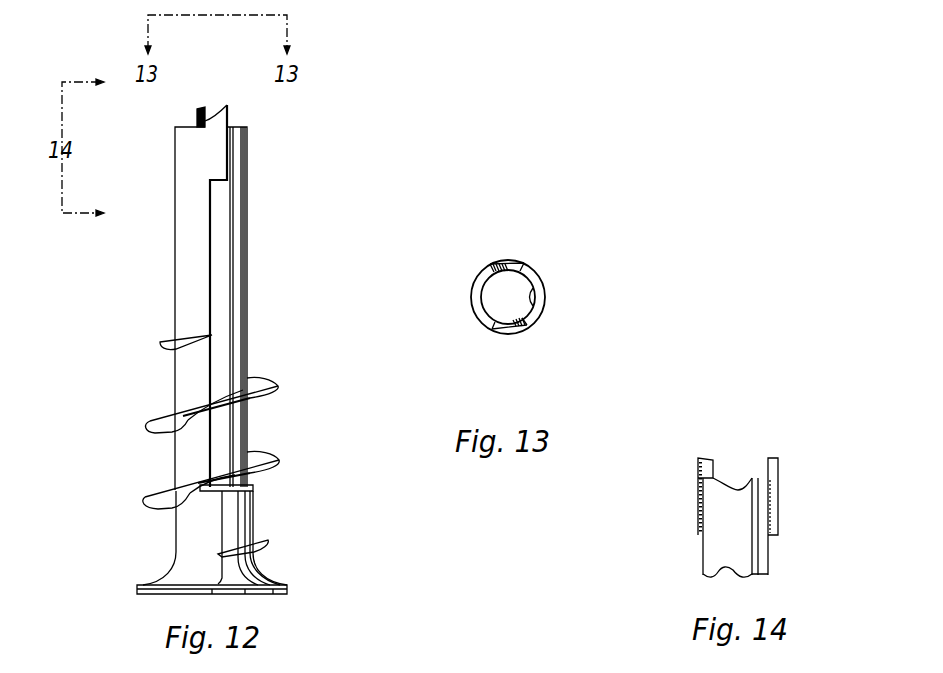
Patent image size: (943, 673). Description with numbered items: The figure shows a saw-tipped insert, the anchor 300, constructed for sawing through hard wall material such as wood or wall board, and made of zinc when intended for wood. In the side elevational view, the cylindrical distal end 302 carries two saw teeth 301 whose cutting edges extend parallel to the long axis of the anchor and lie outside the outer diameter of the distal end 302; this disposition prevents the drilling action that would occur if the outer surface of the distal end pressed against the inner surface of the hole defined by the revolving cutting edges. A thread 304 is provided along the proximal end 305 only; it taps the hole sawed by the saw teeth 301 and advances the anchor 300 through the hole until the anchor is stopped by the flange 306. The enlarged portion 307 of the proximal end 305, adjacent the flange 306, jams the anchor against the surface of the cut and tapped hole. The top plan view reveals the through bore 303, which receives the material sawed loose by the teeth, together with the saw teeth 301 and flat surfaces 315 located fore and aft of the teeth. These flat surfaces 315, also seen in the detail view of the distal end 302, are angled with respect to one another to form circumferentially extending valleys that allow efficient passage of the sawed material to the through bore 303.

In FIG. 12, the anchor 300 is at (136, 316).
In FIG. 12, the saw teeth 301 is at (210, 117).
In FIG. 13, the saw teeth 301 is at (514, 262).
In FIG. 14, the saw teeth 301 is at (778, 470).
In FIG. 12, the distal end 302 is at (227, 253).
In FIG. 13, the through bore 303 is at (536, 292).
In FIG. 12, the thread 304 is at (266, 455).
In FIG. 12, the proximal end 305 is at (198, 448).
In FIG. 12, the flange 306 is at (272, 576).
In FIG. 12, the enlarged portion 307 is at (195, 538).
In FIG. 13, the flat surfaces 315 is at (472, 298).
In FIG. 14, the flat surfaces 315 is at (725, 478).